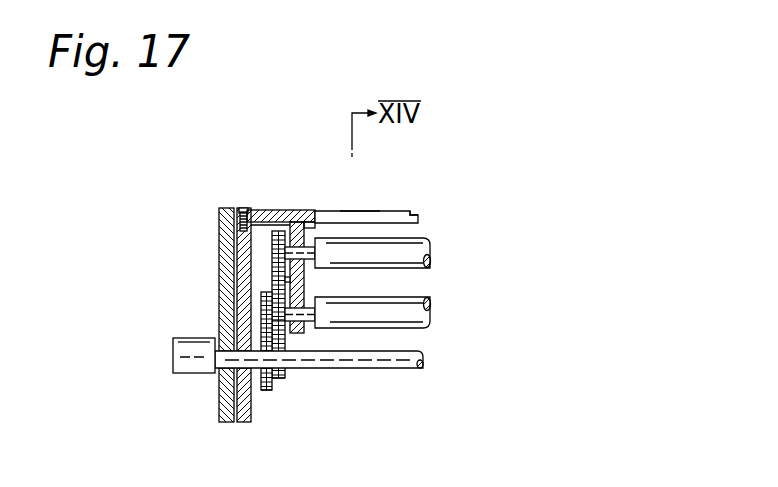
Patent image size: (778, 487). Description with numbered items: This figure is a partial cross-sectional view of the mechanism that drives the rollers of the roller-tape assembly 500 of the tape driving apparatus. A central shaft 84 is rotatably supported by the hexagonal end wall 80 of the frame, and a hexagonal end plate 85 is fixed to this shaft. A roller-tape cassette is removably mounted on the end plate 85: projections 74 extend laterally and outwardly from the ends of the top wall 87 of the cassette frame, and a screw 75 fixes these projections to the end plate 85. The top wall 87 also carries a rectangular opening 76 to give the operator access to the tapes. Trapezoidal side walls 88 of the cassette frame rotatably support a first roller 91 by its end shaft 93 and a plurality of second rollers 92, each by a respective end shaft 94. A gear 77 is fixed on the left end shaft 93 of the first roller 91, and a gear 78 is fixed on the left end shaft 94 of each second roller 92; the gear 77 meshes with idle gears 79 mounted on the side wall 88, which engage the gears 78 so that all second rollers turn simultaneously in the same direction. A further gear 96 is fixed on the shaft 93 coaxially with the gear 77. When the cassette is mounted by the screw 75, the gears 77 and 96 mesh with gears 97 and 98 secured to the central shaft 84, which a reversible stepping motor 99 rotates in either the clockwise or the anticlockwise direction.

The projection 74 is at (251, 209).
The screw 75 is at (242, 208).
The rectangular opening 76 is at (412, 217).
The gear 77 is at (284, 330).
The gear 78 is at (283, 213).
The idle gear 79 is at (268, 271).
The end wall 80 is at (220, 217).
The central shaft 84 is at (394, 368).
The end plate 85 is at (236, 292).
The top wall 87 is at (358, 211).
The side wall 88 is at (323, 210).
The first roller 91 is at (408, 320).
The second roller 92 is at (393, 217).
The end shaft 93 is at (317, 318).
The end shaft 94 is at (325, 250).
The gear 96 is at (236, 312).
The gear 97 is at (280, 380).
The gear 98 is at (265, 392).
The reversible stepping motor 99 is at (184, 364).
The roller-tape assembly 500 is at (402, 156).